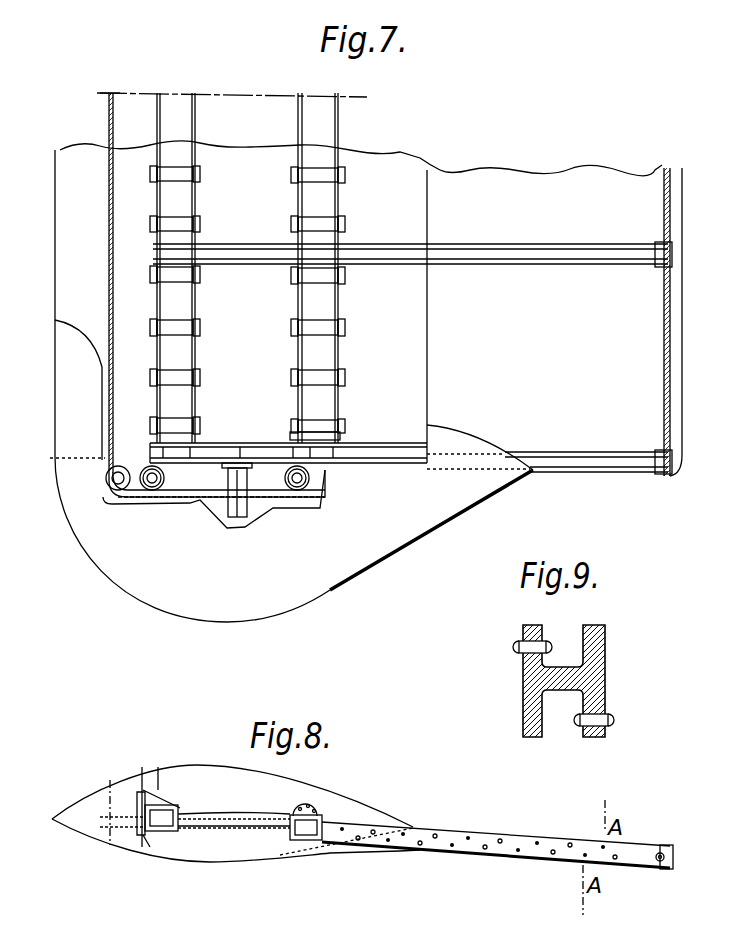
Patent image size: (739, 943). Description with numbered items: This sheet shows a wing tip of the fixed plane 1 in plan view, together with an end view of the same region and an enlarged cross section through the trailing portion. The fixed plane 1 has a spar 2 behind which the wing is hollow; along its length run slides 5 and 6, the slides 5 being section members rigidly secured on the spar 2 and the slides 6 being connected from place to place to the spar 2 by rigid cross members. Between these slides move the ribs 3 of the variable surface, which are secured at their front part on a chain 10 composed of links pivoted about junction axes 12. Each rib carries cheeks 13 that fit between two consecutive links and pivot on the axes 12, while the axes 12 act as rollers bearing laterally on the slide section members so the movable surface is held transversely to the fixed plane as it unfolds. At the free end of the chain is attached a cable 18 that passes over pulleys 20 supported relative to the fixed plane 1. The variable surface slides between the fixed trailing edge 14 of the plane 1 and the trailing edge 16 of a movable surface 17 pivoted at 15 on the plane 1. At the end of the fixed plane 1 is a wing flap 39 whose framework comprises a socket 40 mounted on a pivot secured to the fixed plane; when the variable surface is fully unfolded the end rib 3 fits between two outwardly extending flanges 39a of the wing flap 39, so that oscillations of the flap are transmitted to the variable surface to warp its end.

In FIG. 8, the fixed plane 1 is at (197, 766).
In FIG. 8, the spar 2 is at (138, 775).
In FIG. 7, the ribs 3 is at (542, 255).
In FIG. 8, the ribs 3 is at (228, 816).
In FIG. 8, the slides 5 is at (158, 808).
In FIG. 8, the slides 6 is at (297, 810).
In FIG. 7, the chain 10 is at (193, 200).
In FIG. 7, the junction axes 12 is at (185, 167).
In FIG. 7, the cheeks 13 is at (157, 268).
In FIG. 8, the fixed trailing edge 14 is at (425, 828).
In FIG. 8, the pivot 15 is at (255, 858).
In FIG. 8, the trailing edge 16 is at (413, 855).
In FIG. 8, the movable surface 17 is at (335, 856).
In FIG. 7, the cables 18 is at (113, 385).
In FIG. 7, the pulleys 20 is at (120, 492).
In FIG. 7, the wing flap 39 is at (375, 552).
In FIG. 7, the outwardly extending flanges 39a is at (440, 435).
In FIG. 7, the socket 40 is at (238, 518).